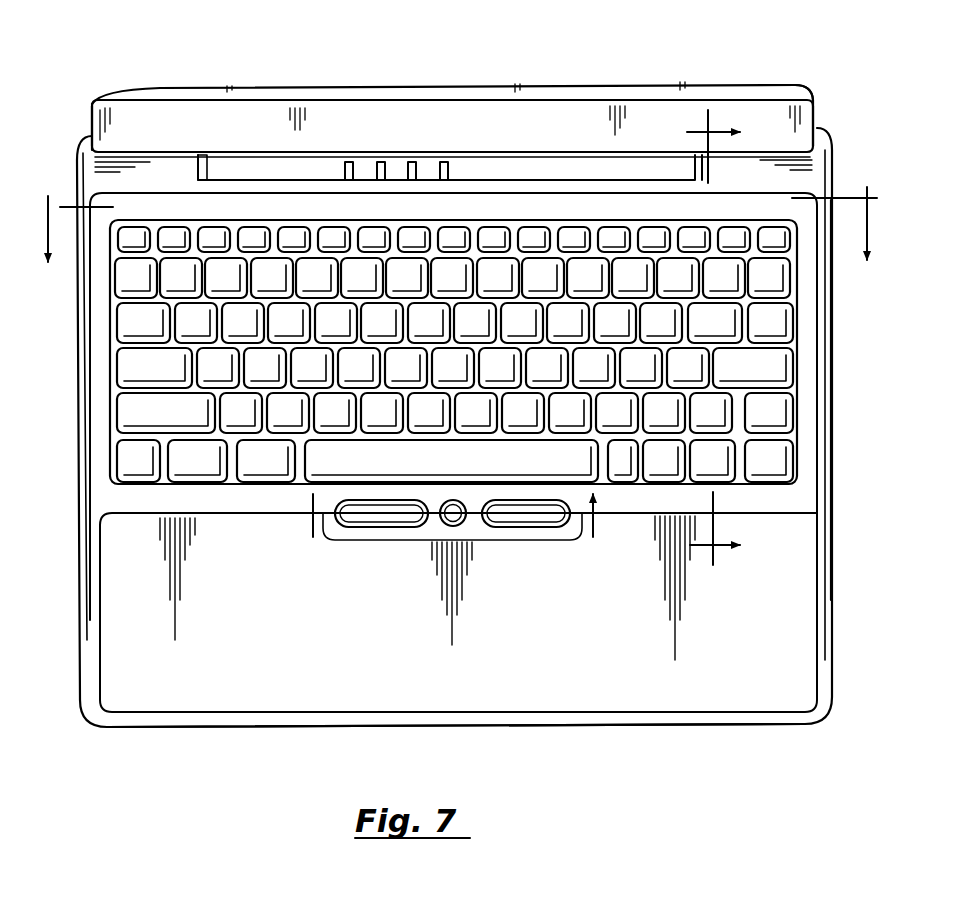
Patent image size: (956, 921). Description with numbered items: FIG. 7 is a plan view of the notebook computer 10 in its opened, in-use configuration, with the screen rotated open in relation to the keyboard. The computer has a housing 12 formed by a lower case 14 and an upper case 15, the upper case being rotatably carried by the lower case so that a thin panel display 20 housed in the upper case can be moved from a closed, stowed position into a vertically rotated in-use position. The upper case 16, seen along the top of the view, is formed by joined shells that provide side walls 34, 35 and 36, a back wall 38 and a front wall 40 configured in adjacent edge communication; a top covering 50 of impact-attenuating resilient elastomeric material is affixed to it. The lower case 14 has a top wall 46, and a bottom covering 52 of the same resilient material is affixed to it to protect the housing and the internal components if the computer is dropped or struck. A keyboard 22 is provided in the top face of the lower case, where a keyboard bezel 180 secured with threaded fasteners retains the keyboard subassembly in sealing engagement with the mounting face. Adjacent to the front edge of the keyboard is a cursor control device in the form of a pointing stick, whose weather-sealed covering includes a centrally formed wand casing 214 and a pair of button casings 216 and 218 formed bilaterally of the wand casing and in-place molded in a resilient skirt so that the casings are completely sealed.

The notebook computer 10 is at (284, 768).
The housing 12 is at (449, 243).
The lower case 14 is at (850, 520).
The upper case 15 is at (441, 510).
The upper case 16 is at (830, 112).
The thin panel display 20 is at (612, 158).
The keyboard 22 is at (108, 385).
The side wall 34 is at (818, 100).
The side wall 35 is at (494, 139).
The side wall 36 is at (90, 118).
The back wall 38 is at (454, 78).
The front wall 40 is at (247, 158).
The top wall 46 is at (558, 645).
The top covering 50 is at (410, 108).
The bottom covering 52 is at (190, 730).
The keyboard bezel 180 is at (816, 447).
The wand casing 214 is at (462, 518).
The button casing 216 is at (373, 513).
The button casing 218 is at (527, 513).